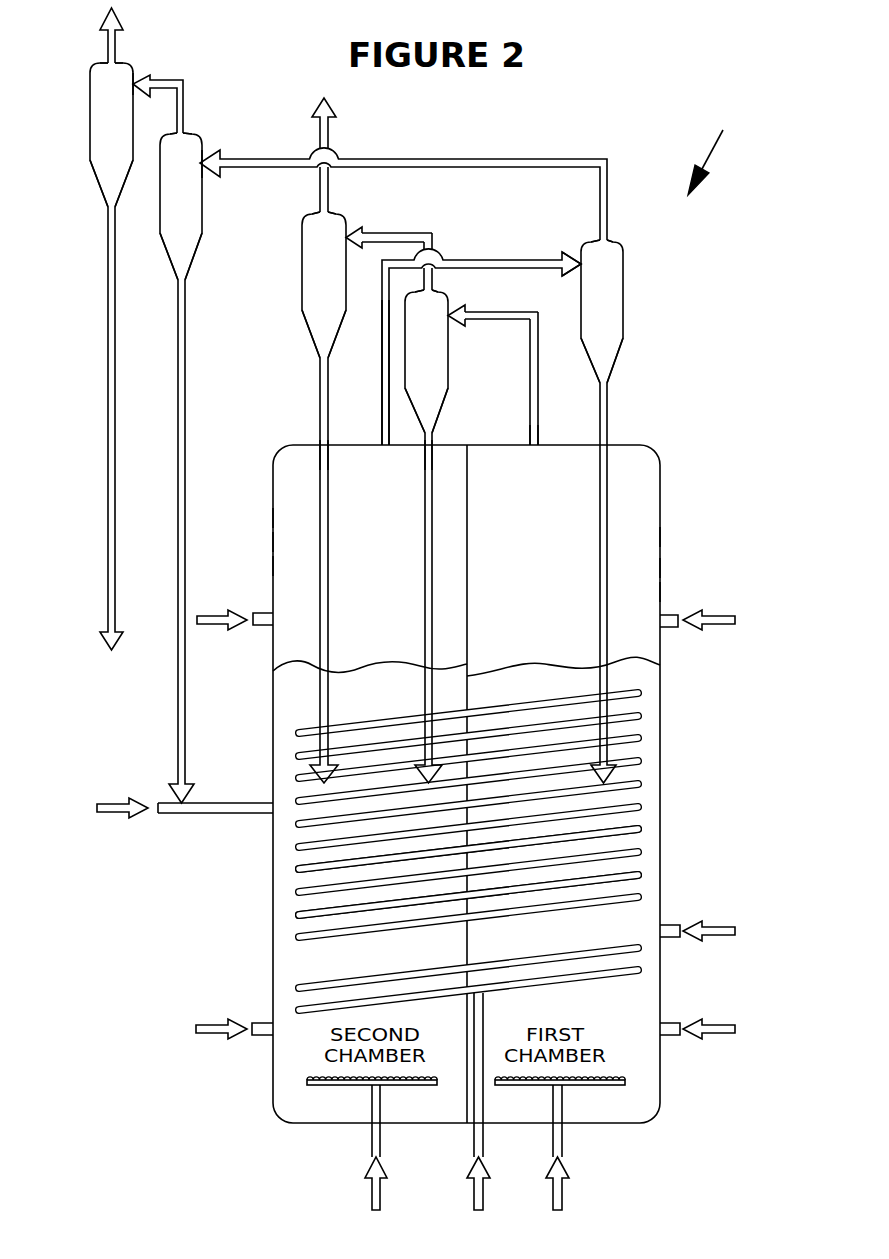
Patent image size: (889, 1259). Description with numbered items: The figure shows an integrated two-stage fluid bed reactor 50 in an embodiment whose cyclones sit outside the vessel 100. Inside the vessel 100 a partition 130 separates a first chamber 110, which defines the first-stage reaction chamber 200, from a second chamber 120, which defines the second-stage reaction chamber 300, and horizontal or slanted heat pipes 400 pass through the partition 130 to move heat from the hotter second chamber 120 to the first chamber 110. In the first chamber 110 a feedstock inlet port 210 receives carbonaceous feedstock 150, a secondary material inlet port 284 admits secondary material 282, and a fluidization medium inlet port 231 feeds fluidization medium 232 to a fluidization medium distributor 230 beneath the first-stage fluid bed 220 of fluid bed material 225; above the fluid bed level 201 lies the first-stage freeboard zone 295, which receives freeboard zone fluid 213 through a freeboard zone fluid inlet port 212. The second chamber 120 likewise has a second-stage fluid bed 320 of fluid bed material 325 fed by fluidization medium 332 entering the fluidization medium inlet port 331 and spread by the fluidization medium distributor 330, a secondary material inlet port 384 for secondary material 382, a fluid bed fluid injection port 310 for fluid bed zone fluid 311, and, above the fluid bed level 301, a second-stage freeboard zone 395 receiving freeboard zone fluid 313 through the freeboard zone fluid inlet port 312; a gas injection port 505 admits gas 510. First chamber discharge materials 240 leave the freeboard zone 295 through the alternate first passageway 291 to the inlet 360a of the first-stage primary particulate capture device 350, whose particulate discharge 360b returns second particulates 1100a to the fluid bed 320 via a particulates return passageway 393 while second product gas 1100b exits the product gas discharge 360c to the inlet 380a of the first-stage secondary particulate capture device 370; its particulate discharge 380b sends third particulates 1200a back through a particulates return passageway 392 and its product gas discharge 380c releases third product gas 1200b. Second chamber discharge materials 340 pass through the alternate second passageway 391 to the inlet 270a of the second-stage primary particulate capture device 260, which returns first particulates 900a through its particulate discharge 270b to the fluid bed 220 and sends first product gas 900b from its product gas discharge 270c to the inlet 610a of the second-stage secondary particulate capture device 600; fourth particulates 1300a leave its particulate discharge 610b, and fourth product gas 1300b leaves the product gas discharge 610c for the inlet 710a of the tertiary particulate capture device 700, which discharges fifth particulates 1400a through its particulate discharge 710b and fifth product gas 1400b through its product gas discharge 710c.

The integrated two-stage fluid bed reactor 50 is at (714, 157).
The vessel 100 is at (660, 510).
The first chamber 110 is at (647, 592).
The second chamber 120 is at (285, 542).
The partition 130 is at (468, 545).
The carbonaceous feedstock 150 is at (720, 938).
The stage 1 reaction chamber 200 is at (647, 568).
The stage 1 fluid bed level 201 is at (545, 670).
The feedstock inlet port 210 is at (662, 940).
The stage 1 freeboard zone fluid inlet port 212 is at (662, 630).
The stage 1 freeboard zone fluid 213 is at (720, 630).
The stage 1 fluid bed 220 is at (466, 851).
The stage 1 fluid bed material 225 is at (647, 892).
The stage 1 fluidization medium distributor 230 is at (602, 1088).
The stage 1 fluidization medium inlet port 231 is at (564, 1141).
The stage 1 fluidization medium 232 is at (552, 1193).
The first chamber discharge materials 240 is at (530, 397).
The stage 2 primary particulate capture device 260 is at (626, 298).
The inlet 270a is at (580, 262).
The particulate discharge 270b is at (607, 384).
The product gas discharge 270c is at (607, 240).
The stage 1 secondary material 282 is at (725, 1040).
The stage 1 secondary material inlet port 284 is at (662, 1040).
The alternate first passageway 291 is at (541, 443).
The stage 1 freeboard zone 295 is at (647, 537).
The stage 2 reaction chamber 300 is at (285, 518).
The stage 2 fluid bed level 301 is at (357, 670).
The stage 2 fluid bed fluid injection port 310 is at (216, 815).
The stage 2 fluid bed zone fluid 311 is at (110, 818).
The stage 2 freeboard zone fluid inlet port 312 is at (272, 627).
The stage 2 freeboard zone fluid 313 is at (212, 612).
The stage 2 fluid bed 320 is at (285, 942).
The stage 2 fluid bed material 325 is at (285, 965).
The stage 2 fluidization medium distributor 330 is at (330, 1086).
The stage 2 fluidization medium inlet port 331 is at (382, 1141).
The stage 2 fluidization medium 332 is at (371, 1193).
The second chamber discharge materials 340 is at (500, 260).
The stage 1 primary particulate capture device 350 is at (455, 358).
The inlet 360a is at (450, 318).
The particulate discharge 360b is at (433, 433).
The product gas discharge 360c is at (434, 290).
The stage 1 secondary particulate capture device 370 is at (302, 272).
The inlet 380a is at (348, 228).
The particulate discharge 380b is at (320, 357).
The product gas discharge 380c is at (319, 209).
The stage 2 secondary material 382 is at (212, 1040).
The stage 2 secondary material inlet port 384 is at (270, 1040).
The alternate second passageway 391 is at (382, 442).
The particulates return passageway 392 is at (328, 447).
The particulates return passageway 393 is at (422, 447).
The stage 2 freeboard zone 395 is at (285, 566).
The heat pipes 400 is at (647, 852).
The gas injection port 505 is at (485, 1141).
The gas 510 is at (473, 1193).
The stage 2 secondary particulate capture device 600 is at (206, 209).
The inlet 610a is at (204, 170).
The particulate discharge 610b is at (186, 282).
The product gas discharge 610c is at (185, 132).
The stage 2 tertiary particulate capture device 700 is at (100, 140).
The inlet 710a is at (134, 78).
The particulate discharge 710b is at (108, 208).
The product gas discharge 710c is at (107, 62).
The first particulates 900a is at (607, 424).
The first product gas 900b is at (605, 160).
The second particulates 1100a is at (424, 497).
The second product gas 1100b is at (430, 232).
The third particulates 1200a is at (320, 397).
The third product gas 1200b is at (329, 130).
The fourth particulates 1300a is at (186, 325).
The fourth product gas 1300b is at (183, 80).
The fifth particulates 1400a is at (108, 252).
The fifth product gas 1400b is at (107, 33).